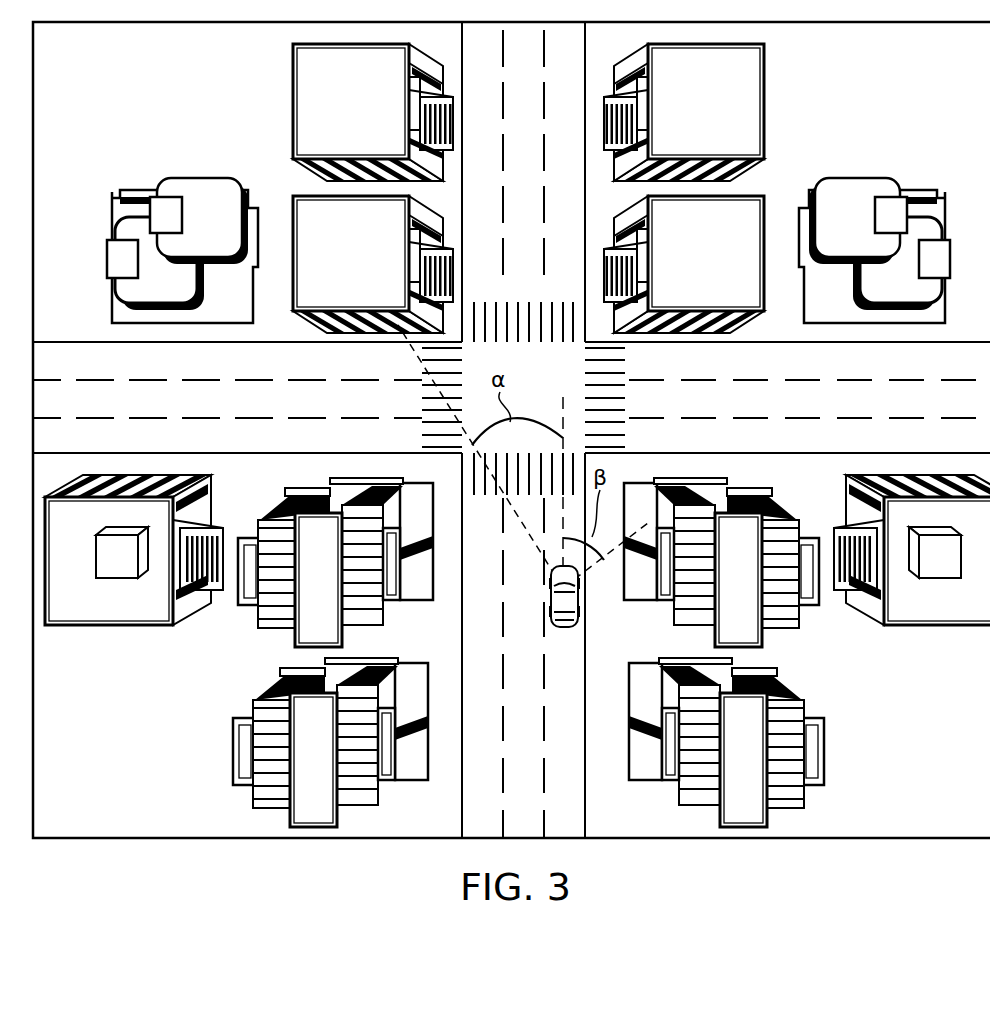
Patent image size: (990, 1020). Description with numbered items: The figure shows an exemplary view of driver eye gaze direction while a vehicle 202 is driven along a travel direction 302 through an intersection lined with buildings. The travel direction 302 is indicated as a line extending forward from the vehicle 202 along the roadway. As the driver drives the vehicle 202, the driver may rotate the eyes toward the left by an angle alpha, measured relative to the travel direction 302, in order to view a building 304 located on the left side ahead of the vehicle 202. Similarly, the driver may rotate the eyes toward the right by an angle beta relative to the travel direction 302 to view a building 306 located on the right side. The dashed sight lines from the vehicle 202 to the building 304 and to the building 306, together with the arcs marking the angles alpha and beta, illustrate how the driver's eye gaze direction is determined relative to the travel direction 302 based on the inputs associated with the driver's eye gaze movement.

The vehicle 202 is at (578, 616).
The travel direction 302 is at (566, 423).
The building 304 is at (307, 213).
The building 306 is at (732, 486).